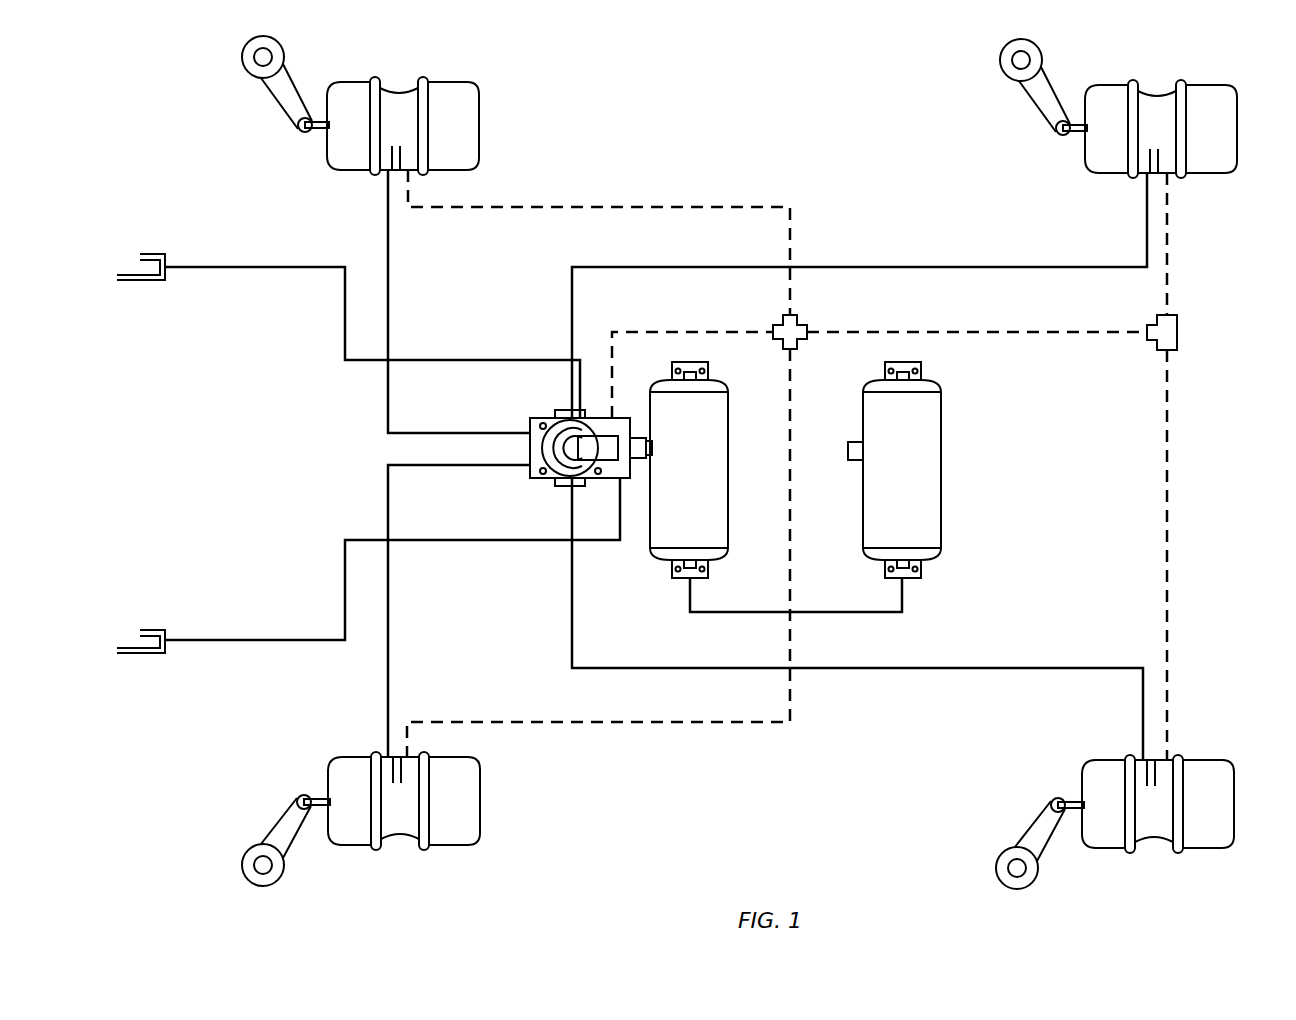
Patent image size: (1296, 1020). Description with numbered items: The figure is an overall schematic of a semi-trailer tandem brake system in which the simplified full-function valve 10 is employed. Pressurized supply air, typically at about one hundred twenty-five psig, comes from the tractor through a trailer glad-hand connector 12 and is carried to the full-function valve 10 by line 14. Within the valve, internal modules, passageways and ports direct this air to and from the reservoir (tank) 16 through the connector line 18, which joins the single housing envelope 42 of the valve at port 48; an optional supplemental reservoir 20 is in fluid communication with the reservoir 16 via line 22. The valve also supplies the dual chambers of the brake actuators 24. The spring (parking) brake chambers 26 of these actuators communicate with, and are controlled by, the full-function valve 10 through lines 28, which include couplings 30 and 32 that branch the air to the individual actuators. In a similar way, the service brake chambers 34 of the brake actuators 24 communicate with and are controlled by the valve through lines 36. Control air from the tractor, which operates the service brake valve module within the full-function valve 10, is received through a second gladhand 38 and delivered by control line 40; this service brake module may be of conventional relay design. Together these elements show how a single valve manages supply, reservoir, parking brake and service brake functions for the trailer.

The simplified full-function valve 10 is at (535, 462).
The trailer glad-hand connector 12 is at (145, 655).
The supply line 14 is at (252, 640).
The reservoir (tank) 16 is at (677, 457).
The connector line 18 is at (647, 460).
The optional supplemental reservoir 20 is at (891, 457).
The line 22 is at (865, 612).
The brake actuators 24 is at (757, 474).
The spring (parking) brake chambers 26 is at (468, 92).
The spring brake lines 28 is at (683, 207).
The coupling 30 is at (803, 322).
The coupling 32 is at (1178, 335).
The service brake chambers 34 is at (338, 92).
The service brake lines 36 is at (913, 267).
The gladhand 38 is at (150, 282).
The control line 40 is at (258, 267).
The single housing envelope 42 is at (568, 468).
The port 48 is at (643, 435).